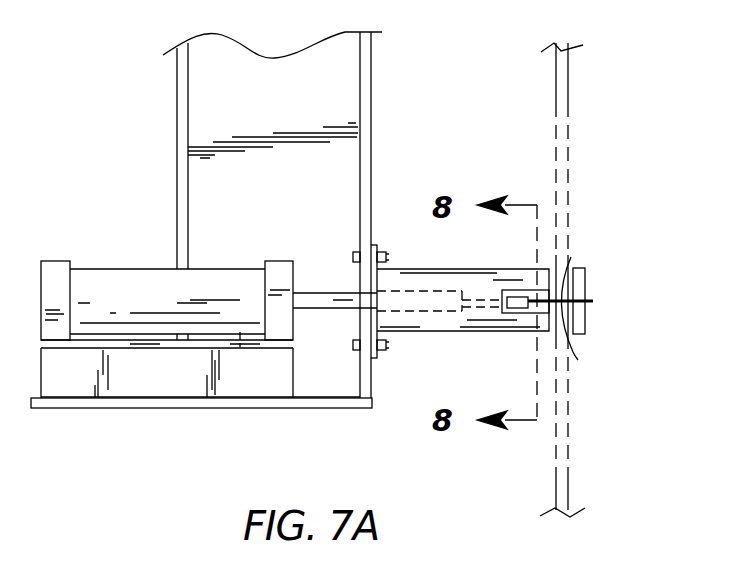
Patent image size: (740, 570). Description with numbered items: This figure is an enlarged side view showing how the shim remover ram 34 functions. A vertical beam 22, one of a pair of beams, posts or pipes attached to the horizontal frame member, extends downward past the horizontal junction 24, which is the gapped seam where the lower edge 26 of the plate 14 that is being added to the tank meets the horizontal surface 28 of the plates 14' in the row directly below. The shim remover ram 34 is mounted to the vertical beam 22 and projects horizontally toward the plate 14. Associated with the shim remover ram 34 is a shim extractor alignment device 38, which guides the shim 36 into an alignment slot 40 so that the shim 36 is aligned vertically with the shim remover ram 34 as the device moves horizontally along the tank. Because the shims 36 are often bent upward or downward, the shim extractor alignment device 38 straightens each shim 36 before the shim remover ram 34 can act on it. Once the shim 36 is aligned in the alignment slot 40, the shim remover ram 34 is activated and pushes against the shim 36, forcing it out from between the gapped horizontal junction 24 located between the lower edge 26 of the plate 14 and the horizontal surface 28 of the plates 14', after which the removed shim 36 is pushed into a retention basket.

The vertical beam 22 is at (371, 85).
The shim extractor alignment device 38 is at (417, 278).
The shim remover ram 34 is at (135, 283).
The plate 14 is at (603, 189).
The plates 14' is at (607, 426).
The lower edge 26 is at (569, 256).
The shim 36 is at (595, 301).
The horizontal junction 24 is at (582, 323).
The horizontal surface 28 is at (567, 352).
The alignment slot 40 is at (524, 315).